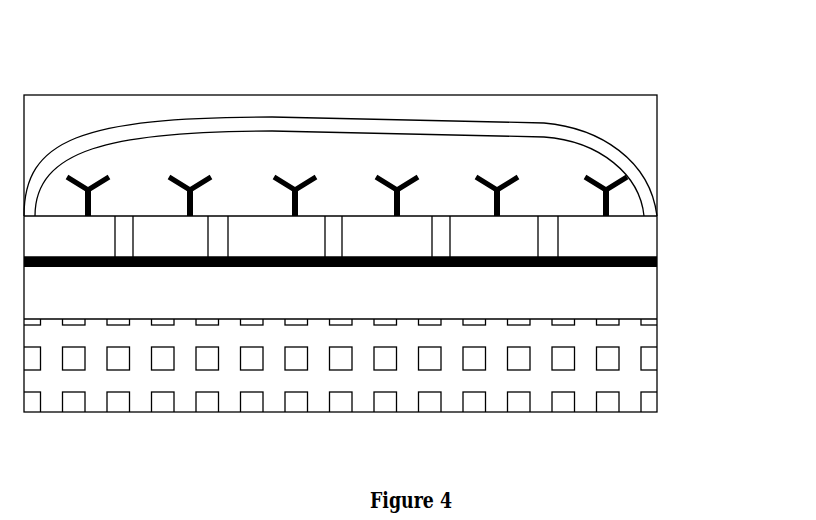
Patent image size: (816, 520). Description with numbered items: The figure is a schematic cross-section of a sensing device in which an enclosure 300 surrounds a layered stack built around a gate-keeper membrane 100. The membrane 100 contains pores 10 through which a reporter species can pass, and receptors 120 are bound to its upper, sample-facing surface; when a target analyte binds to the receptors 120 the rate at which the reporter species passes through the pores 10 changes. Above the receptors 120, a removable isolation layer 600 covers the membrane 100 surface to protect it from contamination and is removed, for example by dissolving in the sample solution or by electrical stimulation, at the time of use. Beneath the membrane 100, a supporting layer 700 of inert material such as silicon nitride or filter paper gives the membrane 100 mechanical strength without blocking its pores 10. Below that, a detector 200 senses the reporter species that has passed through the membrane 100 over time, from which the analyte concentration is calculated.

The enclosure 300 is at (310, 95).
The isolation layer 600 is at (627, 150).
The gate-keeper membrane 100 is at (657, 218).
The pores 10 is at (122, 216).
The receptors 120 is at (210, 175).
The supporting layer 700 is at (657, 263).
The detector 200 is at (657, 382).